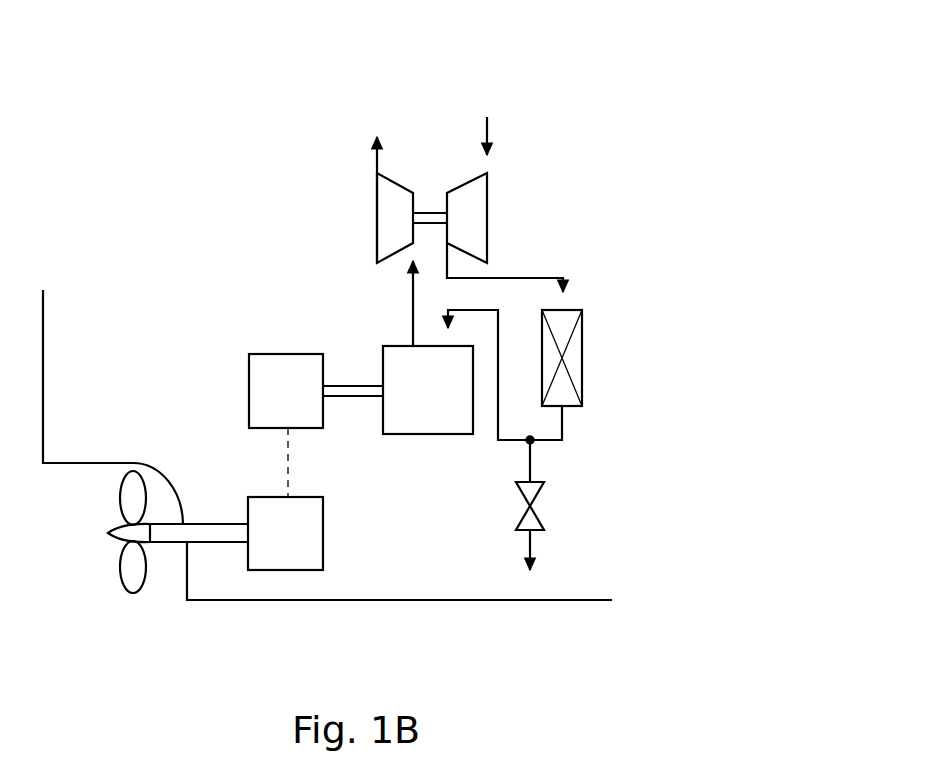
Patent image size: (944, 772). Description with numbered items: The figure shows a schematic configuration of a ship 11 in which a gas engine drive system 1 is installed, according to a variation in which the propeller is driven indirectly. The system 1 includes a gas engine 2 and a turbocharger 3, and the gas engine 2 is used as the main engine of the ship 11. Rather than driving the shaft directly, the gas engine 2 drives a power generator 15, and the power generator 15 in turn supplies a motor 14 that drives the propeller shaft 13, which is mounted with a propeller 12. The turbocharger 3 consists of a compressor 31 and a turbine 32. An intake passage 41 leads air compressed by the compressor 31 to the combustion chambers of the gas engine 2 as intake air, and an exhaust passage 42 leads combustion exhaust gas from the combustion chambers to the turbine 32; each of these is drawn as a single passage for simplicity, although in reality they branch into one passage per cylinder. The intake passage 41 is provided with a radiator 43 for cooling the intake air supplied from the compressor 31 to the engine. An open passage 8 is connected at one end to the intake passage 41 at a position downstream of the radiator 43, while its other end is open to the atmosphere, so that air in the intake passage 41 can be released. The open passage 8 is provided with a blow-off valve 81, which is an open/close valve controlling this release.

The gas engine drive system 1 is at (640, 203).
The gas engine 2 is at (428, 420).
The turbocharger 3 is at (437, 142).
The compressor 31 is at (467, 205).
The turbine 32 is at (393, 202).
The intake passage 41 is at (542, 278).
The exhaust passage 42 is at (413, 290).
The radiator 43 is at (582, 358).
The open passage 8 is at (532, 556).
The blow-off valve 81 is at (543, 491).
The ship 11 is at (568, 600).
The propeller 12 is at (128, 562).
The propeller shaft 13 is at (210, 535).
The motor 14 is at (287, 570).
The power generator 15 is at (249, 383).